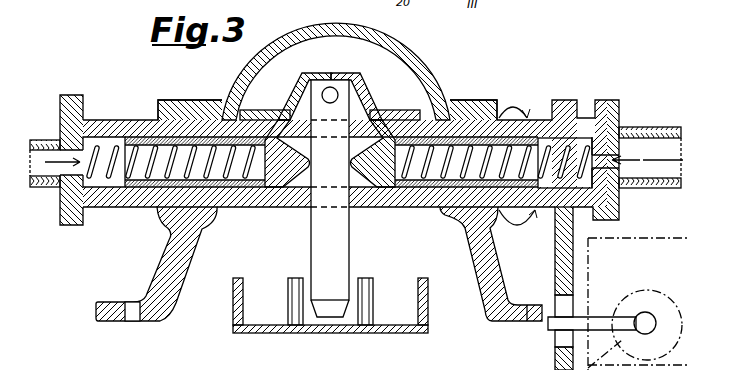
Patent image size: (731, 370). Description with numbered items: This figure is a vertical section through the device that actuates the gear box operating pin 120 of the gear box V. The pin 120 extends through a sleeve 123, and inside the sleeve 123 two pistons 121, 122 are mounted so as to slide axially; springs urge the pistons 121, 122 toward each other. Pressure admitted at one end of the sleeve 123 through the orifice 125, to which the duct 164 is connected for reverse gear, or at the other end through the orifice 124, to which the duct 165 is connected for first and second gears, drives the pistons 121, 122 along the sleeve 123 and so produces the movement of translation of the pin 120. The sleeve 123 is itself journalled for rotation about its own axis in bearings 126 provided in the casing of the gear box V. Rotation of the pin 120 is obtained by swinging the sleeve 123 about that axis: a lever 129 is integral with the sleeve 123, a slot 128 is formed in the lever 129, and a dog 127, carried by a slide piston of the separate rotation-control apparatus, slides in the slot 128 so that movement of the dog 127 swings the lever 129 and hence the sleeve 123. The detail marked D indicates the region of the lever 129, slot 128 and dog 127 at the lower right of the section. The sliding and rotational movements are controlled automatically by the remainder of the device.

The gear box operating pin 120 is at (322, 256).
The piston 121 is at (288, 168).
The piston 122 is at (382, 173).
The sleeve 123 is at (118, 125).
The orifice 124 is at (628, 157).
The orifice 125 is at (47, 230).
The bearings 126 is at (184, 108).
The dog 127 is at (550, 323).
The slot 128 is at (556, 342).
The lever 129 is at (556, 290).
The duct 164 is at (58, 202).
The duct 165 is at (661, 165).
The gear box V is at (410, 50).
The section detail D is at (637, 304).